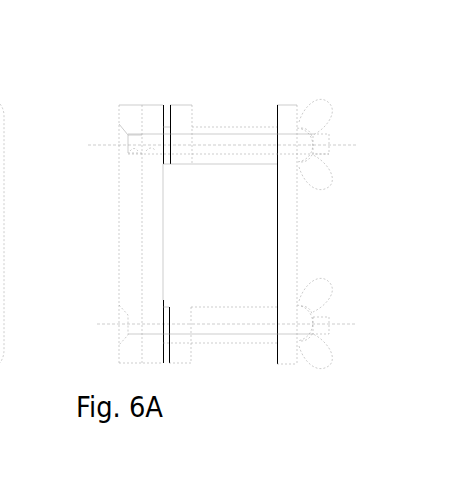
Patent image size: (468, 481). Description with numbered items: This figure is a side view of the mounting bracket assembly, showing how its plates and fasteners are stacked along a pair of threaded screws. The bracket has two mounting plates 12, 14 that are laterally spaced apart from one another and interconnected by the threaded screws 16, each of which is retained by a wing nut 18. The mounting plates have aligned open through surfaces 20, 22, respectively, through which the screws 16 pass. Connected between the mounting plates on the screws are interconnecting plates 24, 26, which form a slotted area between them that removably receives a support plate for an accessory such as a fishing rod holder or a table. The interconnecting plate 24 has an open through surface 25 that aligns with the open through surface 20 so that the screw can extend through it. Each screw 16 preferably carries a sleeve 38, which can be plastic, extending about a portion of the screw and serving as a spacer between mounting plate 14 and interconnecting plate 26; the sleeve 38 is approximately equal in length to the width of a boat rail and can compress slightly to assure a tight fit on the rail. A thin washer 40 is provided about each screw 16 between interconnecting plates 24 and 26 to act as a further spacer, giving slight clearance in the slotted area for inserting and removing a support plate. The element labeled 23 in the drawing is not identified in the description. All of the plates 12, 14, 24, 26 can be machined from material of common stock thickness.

The mounting plate 12 is at (127, 112).
The mounting plate 14 is at (287, 110).
The threaded screw 16 is at (330, 146).
The wing nut 18 is at (322, 178).
The open through surface 20 is at (118, 150).
The open through surface 22 is at (312, 137).
The washer 23 is at (152, 153).
The interconnecting plate 24 is at (152, 115).
The open through surface 25 is at (130, 155).
The interconnecting plate 26 is at (180, 110).
The sleeve 38 is at (233, 126).
The thin washer 40 is at (168, 305).